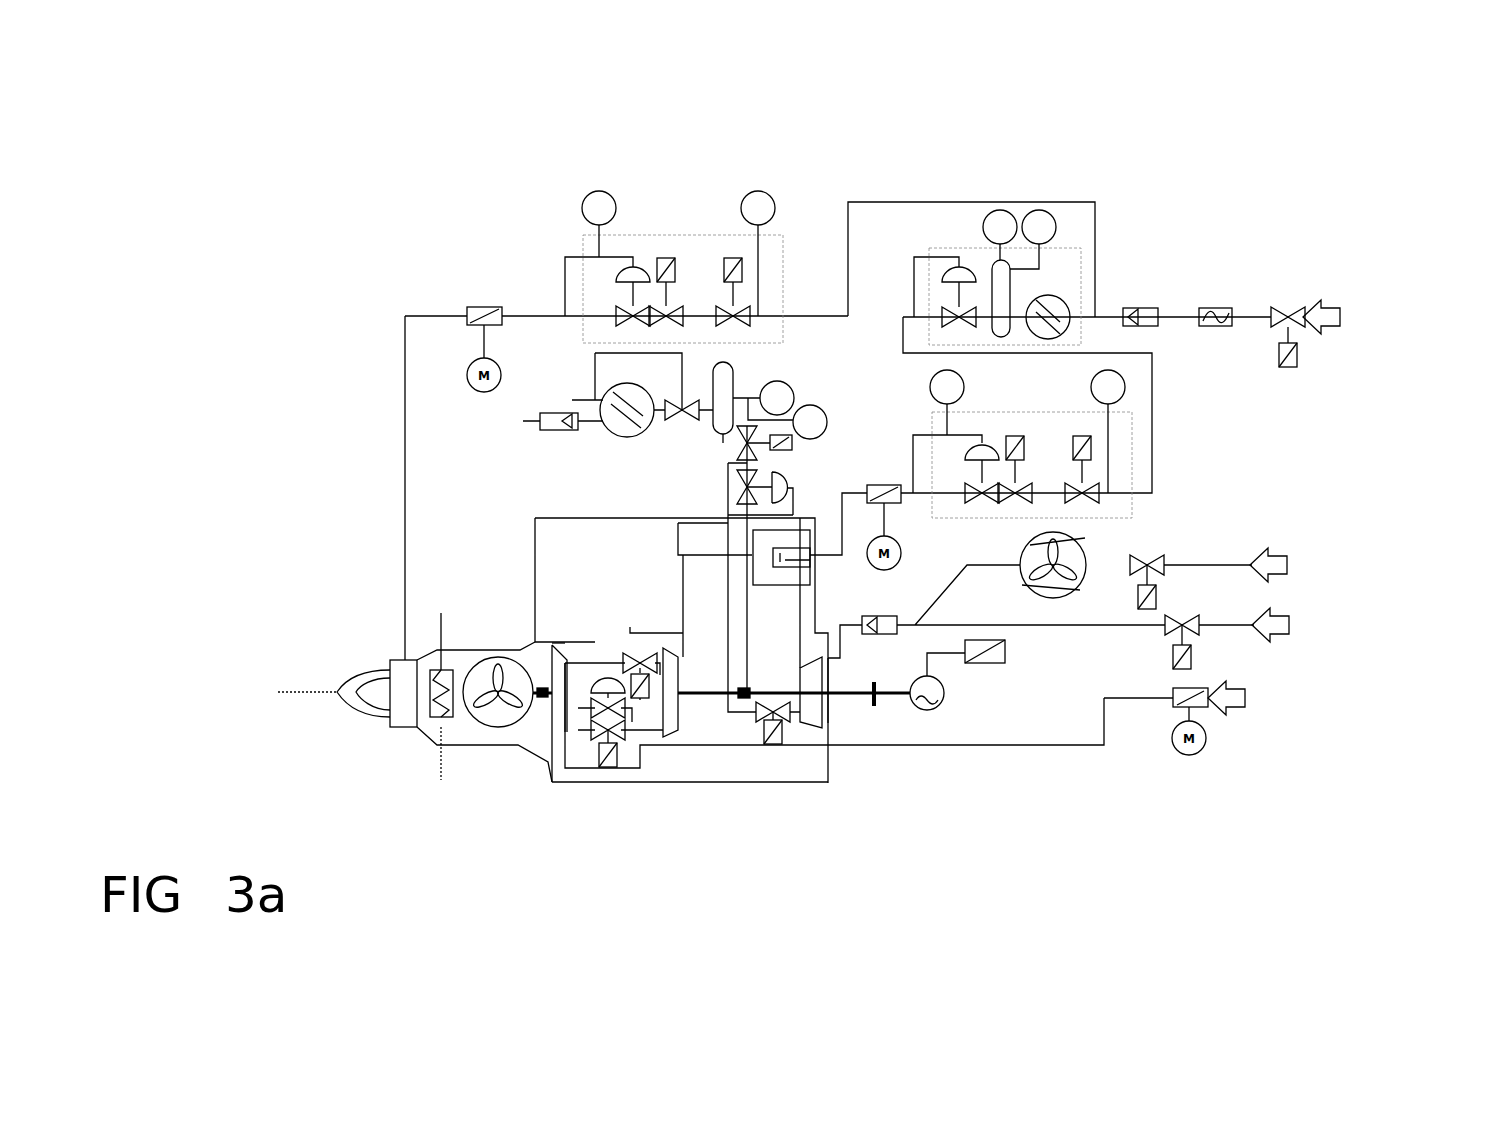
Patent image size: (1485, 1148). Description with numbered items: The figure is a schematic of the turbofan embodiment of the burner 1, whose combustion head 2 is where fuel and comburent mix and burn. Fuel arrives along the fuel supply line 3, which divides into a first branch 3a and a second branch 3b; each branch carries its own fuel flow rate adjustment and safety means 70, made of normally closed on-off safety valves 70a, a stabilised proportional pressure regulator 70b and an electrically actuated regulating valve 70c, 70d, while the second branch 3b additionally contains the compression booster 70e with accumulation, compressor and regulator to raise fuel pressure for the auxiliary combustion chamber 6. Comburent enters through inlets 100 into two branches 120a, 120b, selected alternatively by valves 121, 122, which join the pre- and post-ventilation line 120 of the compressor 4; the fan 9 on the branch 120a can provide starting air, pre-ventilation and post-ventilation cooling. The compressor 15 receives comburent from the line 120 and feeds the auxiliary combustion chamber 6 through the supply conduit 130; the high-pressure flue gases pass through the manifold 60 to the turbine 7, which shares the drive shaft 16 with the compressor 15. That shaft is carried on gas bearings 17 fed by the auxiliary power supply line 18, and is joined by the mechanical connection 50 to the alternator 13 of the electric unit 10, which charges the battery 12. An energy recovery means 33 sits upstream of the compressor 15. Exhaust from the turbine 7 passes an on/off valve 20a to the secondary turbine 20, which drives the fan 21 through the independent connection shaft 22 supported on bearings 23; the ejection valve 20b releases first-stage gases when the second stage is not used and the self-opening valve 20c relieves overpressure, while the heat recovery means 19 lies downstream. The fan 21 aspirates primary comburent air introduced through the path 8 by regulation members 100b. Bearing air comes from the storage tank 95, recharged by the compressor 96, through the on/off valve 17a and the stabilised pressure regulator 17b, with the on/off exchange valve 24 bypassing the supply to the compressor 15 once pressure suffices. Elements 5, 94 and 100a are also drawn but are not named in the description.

The burner 1 is at (1323, 130).
The combustion head 2 is at (338, 662).
The fuel supply line 3 is at (1253, 305).
The first branch 3a is at (858, 200).
The second branch 3b is at (856, 487).
The compressor 4 is at (587, 633).
The motor operated valve actuator 5 is at (1198, 755).
The auxiliary combustion chamber 6 is at (813, 520).
The turbine 7 is at (675, 748).
The path for the supply of comburent air 8 is at (602, 635).
The fan 9 is at (1073, 563).
The electric unit 10 is at (928, 712).
The battery 12 is at (990, 668).
The alternator 13 is at (957, 680).
The compressor 15 is at (803, 730).
The drive shaft 16 is at (762, 688).
The gas bearings 17 is at (742, 712).
The on/off valve 17a is at (737, 445).
The stabilised pressure regulator 17b is at (737, 490).
The auxiliary power supply line 18 is at (781, 374).
The heat recovery means 19 is at (433, 722).
The secondary turbine 20 is at (563, 730).
The on/off valve 20a is at (648, 703).
The ejection valve 20b is at (600, 773).
The self-opening valve 20c is at (615, 720).
The fan 21 is at (493, 712).
The connection shaft 22 is at (540, 706).
The bearings 23 is at (540, 714).
The on/off exchange valve 24 is at (769, 747).
The energy recovery means 33 is at (920, 657).
The mechanical connection 50 is at (875, 712).
The manifold 60 is at (680, 548).
The fuel flow rate adjustment and safety means 70 is at (1118, 225).
The on-off safety valves 70a is at (718, 222).
The stabilised proportional pressure regulator 70b is at (633, 222).
The electrically actuated regulating valve 70c is at (485, 290).
The electrically actuated regulating valve 70d is at (898, 512).
The compression booster 70e is at (1082, 243).
The filter 94 is at (550, 420).
The storage tank 95 is at (727, 380).
The compressor 96 is at (600, 401).
The inlets 100 is at (1305, 560).
The cooling air line 100a is at (1106, 752).
The regulation members 100b is at (642, 652).
The pre- and post-ventilation line 120 is at (906, 619).
The first upstream branch 120a is at (1252, 557).
The second upstream branch 120b is at (1232, 632).
The valve 121 is at (1157, 552).
The valve 122 is at (1162, 633).
The supply conduit 130 is at (816, 611).